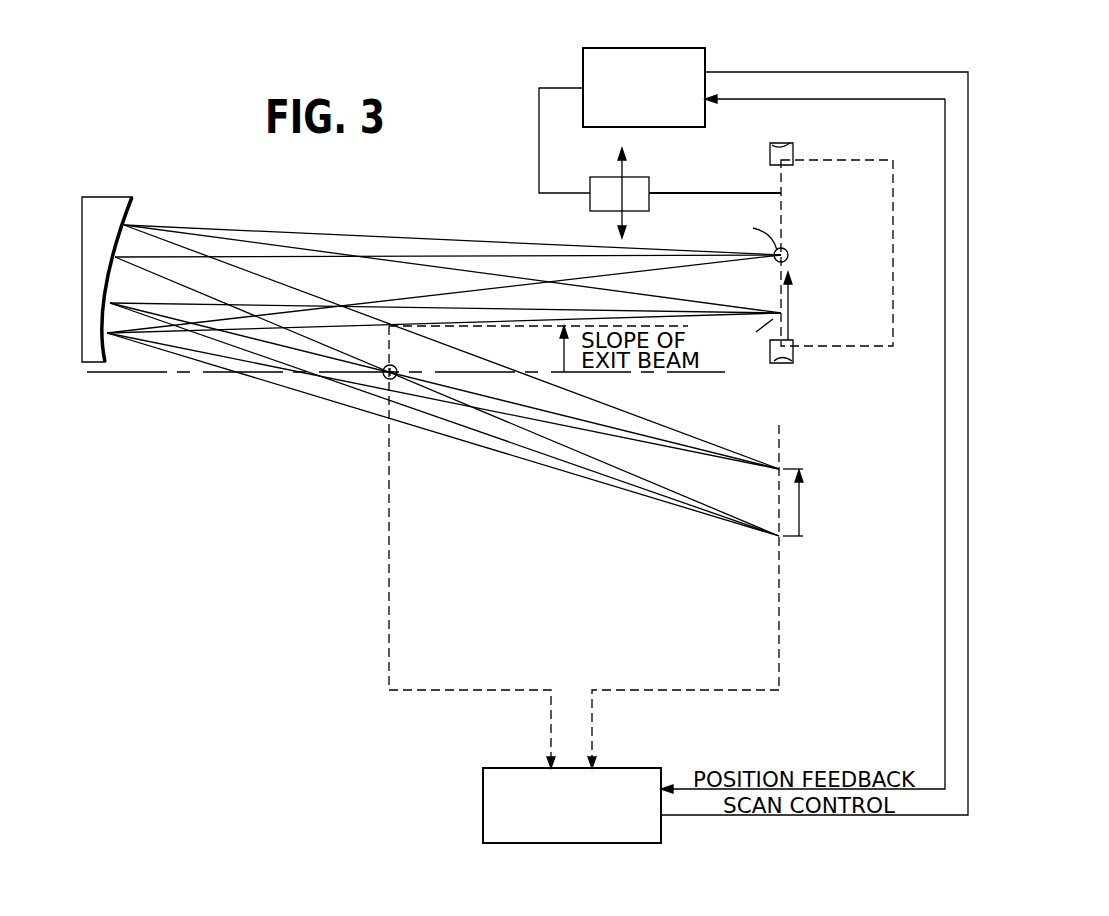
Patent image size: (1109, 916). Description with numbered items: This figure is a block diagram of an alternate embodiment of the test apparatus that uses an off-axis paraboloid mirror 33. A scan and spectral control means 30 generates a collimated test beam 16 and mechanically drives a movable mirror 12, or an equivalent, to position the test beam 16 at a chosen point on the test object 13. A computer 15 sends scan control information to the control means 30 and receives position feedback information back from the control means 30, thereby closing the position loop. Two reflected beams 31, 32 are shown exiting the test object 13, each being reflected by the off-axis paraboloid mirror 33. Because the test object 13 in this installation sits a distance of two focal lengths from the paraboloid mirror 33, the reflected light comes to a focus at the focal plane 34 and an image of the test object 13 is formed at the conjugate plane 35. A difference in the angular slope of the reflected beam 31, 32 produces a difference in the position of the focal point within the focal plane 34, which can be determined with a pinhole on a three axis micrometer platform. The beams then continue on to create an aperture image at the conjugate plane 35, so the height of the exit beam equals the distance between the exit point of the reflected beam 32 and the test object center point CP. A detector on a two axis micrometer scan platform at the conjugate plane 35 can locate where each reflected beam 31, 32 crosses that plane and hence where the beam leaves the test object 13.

The scan and spectral control means 30 is at (670, 48).
The movable mirror 12 is at (644, 180).
The test beam 16 is at (698, 193).
The test object 13 is at (826, 161).
The off-axis paraboloid mirror 33 is at (113, 197).
The reflected beam 31 is at (745, 259).
The reflected beam 32 is at (729, 310).
The focal plane 34 is at (392, 516).
The conjugate plane 35 is at (781, 586).
The computer 15 is at (523, 768).